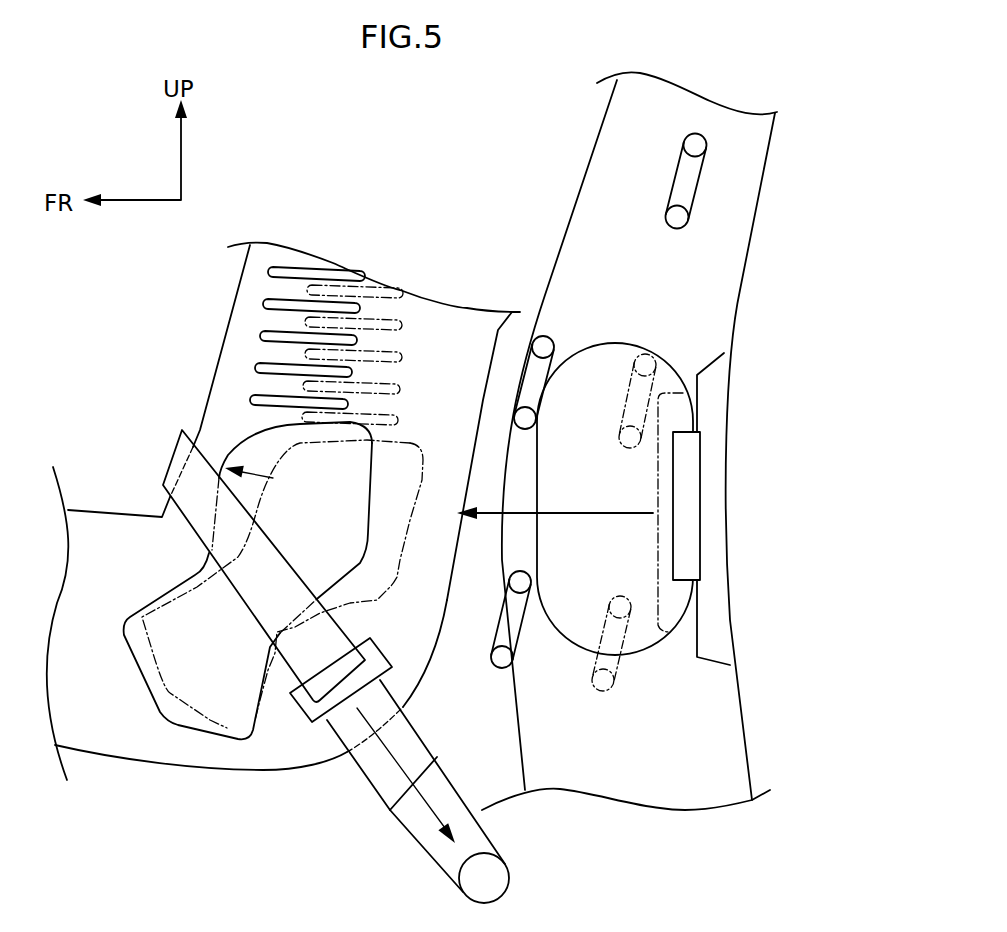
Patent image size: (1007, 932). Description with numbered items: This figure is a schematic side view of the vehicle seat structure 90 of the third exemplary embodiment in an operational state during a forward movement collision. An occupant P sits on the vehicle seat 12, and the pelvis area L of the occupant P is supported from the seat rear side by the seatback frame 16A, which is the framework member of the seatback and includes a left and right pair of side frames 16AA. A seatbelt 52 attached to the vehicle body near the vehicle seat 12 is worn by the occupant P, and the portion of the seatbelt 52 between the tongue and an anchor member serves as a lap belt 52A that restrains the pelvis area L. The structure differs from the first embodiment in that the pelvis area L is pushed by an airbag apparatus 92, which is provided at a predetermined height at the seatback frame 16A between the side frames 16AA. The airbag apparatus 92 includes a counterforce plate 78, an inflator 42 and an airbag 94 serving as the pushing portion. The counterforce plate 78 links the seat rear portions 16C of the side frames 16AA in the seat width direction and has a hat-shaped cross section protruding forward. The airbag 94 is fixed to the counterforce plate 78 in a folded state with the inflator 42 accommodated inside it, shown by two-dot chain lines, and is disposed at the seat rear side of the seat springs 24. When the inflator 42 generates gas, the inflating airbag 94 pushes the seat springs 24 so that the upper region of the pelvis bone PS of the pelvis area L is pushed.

The vehicle seat 12 is at (496, 727).
The seatback frame 16A is at (725, 436).
The side frames 16AA is at (733, 220).
The seat rear portions 16C is at (723, 307).
The seat springs 24 is at (667, 219).
The inflator 42 is at (690, 493).
The seatbelt 52 is at (278, 654).
The lap belt 52A is at (165, 472).
The counterforce plate 78 is at (710, 360).
The vehicle seat structure 90 is at (518, 254).
The airbag apparatus 92 is at (688, 330).
The airbag 94 is at (590, 347).
The occupant P is at (222, 345).
The pelvis bone PS is at (247, 453).
The pelvis area L is at (483, 453).